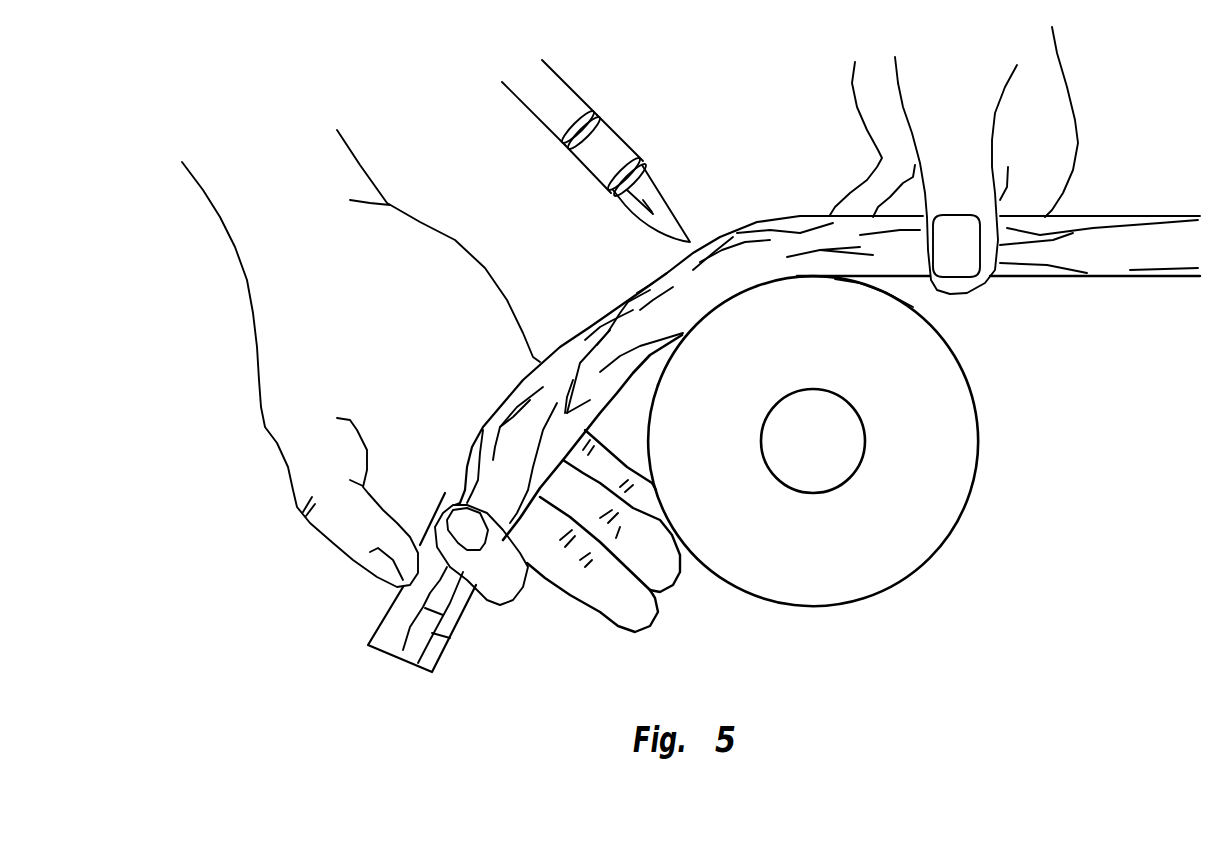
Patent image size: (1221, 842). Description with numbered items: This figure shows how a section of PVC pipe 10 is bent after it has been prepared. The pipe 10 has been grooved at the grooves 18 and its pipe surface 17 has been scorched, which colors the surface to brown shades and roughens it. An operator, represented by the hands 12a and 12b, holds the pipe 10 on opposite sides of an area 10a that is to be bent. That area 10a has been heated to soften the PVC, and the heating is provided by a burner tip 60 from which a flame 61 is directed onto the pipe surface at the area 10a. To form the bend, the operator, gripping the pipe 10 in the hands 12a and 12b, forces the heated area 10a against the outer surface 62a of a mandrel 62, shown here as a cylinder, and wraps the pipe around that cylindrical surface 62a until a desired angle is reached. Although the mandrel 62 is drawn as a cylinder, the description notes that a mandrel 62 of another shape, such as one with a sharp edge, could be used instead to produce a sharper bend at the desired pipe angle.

The PVC pipe 10 is at (374, 611).
The area to be bent 10a is at (673, 253).
The hand 12a is at (984, 97).
The hand 12b is at (425, 364).
The pipe surface 17 is at (812, 378).
The grooves 18 is at (465, 627).
The burner tip 60 is at (603, 143).
The flame 61 is at (670, 181).
The mandrel 62 is at (825, 356).
The outer surface of mandrel 62a is at (718, 335).